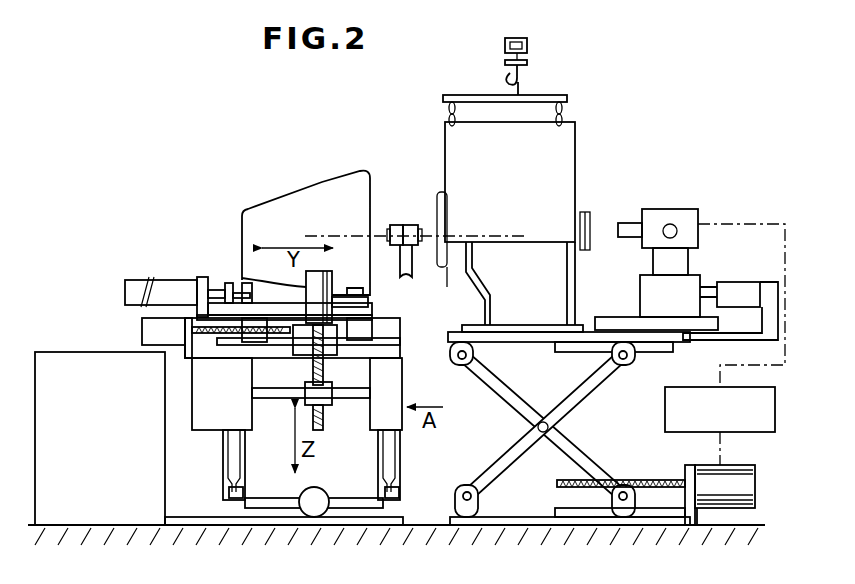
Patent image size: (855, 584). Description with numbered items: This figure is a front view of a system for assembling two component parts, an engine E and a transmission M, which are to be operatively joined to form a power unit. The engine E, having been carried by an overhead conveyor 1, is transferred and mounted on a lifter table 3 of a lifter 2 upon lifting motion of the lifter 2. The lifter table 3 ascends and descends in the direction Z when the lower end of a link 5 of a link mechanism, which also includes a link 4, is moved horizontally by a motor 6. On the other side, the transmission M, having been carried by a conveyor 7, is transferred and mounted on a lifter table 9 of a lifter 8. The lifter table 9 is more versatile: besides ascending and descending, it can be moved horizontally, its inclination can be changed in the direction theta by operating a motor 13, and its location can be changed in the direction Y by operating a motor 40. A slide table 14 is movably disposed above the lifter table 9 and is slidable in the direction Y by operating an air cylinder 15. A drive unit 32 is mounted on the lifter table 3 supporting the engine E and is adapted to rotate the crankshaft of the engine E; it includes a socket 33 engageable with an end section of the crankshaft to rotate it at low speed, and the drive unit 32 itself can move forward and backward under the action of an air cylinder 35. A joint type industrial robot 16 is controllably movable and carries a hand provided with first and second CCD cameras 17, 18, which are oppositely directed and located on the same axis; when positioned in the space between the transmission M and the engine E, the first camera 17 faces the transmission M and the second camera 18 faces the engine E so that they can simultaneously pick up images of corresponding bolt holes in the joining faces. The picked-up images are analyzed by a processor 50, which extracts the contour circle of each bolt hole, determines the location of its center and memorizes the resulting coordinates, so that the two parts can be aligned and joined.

The overhead conveyor 1 is at (528, 62).
The lifter 2 is at (570, 433).
The lifter table 3 is at (605, 335).
The link 4 is at (588, 397).
The link 5 is at (552, 442).
The motor 6 is at (750, 480).
The conveyor 7 is at (60, 352).
The lifter 8 is at (272, 455).
The lifter table 9 is at (236, 360).
The motor 13 is at (312, 283).
The slide table 14 is at (242, 297).
The air cylinder 15 is at (133, 280).
The joint type industrial robot 16 is at (410, 262).
The first CCD camera 17 is at (398, 225).
The second CCD camera 18 is at (410, 225).
The drive unit 32 is at (702, 205).
The socket 33 is at (628, 227).
The air cylinder 35 is at (745, 282).
The motor 40 is at (142, 325).
The processor 50 is at (693, 432).
The transmission M is at (295, 210).
The engine E is at (563, 163).